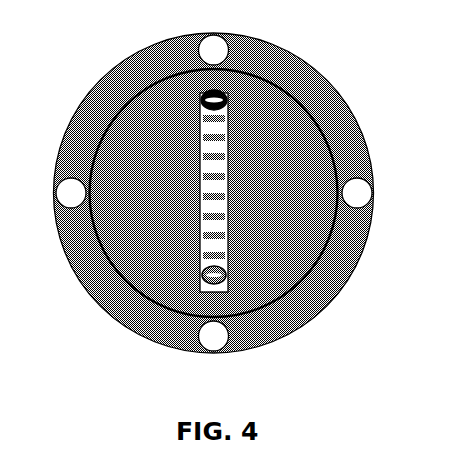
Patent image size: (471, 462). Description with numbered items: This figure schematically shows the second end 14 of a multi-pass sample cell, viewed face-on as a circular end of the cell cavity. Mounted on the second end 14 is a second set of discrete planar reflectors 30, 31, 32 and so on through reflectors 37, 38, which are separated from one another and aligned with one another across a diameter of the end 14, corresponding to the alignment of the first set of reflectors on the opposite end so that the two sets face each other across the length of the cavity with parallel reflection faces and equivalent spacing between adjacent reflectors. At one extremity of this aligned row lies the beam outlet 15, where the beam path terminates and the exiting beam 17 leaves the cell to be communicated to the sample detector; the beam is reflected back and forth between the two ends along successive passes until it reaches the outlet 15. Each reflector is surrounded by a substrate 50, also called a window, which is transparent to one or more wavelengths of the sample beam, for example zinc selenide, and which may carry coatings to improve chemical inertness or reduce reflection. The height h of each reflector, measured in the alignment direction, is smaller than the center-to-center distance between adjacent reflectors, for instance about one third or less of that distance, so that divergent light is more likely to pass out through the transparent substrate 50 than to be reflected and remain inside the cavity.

The second end 14 is at (122, 92).
The beam outlet 15 is at (228, 104).
The exiting beam 17 is at (203, 95).
The planar reflector 30 is at (200, 118).
The planar reflector 31 is at (200, 137).
The planar reflector 32 is at (200, 160).
The substrate 50 is at (200, 206).
The planar reflector 37 is at (200, 253).
The planar reflector 38 is at (201, 272).
The height of each reflector h is at (227, 155).